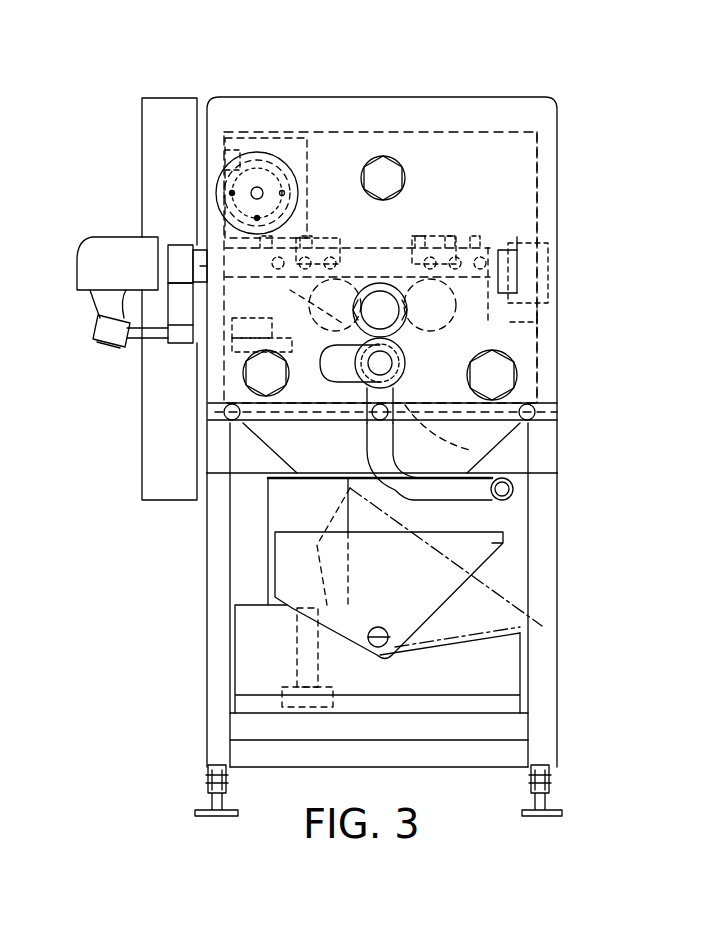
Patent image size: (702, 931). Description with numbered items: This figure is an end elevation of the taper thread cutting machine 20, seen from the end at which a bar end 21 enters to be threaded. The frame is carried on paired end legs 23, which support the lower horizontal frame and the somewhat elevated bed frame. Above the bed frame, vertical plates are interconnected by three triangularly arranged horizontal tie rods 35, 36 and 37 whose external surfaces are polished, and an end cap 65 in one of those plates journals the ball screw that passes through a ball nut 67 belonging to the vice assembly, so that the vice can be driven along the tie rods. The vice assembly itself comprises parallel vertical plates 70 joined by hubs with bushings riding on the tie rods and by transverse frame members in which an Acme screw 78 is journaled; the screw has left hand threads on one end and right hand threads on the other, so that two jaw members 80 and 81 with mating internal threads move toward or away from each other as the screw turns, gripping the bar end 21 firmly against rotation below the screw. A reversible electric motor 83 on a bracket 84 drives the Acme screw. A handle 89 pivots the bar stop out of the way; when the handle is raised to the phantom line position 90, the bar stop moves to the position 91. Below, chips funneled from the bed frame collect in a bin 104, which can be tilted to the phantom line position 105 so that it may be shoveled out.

The taper thread cutting machine 20 is at (572, 98).
The bar end 21 is at (380, 283).
The end legs 23 is at (207, 640).
The tie rod 35 is at (243, 380).
The tie rod 36 is at (392, 157).
The tie rod 37 is at (497, 368).
The end cap 65 is at (268, 160).
The ball nut 67 is at (222, 190).
The vertical plate 70 is at (590, 267).
The Acme screw 78 is at (428, 240).
The jaw member 80 is at (330, 238).
The jaw member 81 is at (540, 322).
The reversible electric motor 83 is at (78, 258).
The bracket 84 is at (180, 245).
The handle 89 is at (513, 490).
The phantom line position of handle 90 is at (512, 233).
The position of bar stop 91 is at (340, 385).
The bin 104 is at (492, 542).
The phantom line position of bin 105 is at (512, 597).